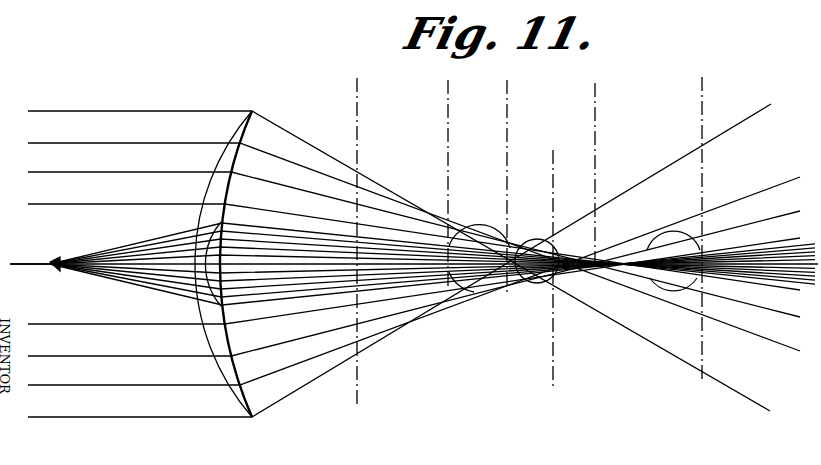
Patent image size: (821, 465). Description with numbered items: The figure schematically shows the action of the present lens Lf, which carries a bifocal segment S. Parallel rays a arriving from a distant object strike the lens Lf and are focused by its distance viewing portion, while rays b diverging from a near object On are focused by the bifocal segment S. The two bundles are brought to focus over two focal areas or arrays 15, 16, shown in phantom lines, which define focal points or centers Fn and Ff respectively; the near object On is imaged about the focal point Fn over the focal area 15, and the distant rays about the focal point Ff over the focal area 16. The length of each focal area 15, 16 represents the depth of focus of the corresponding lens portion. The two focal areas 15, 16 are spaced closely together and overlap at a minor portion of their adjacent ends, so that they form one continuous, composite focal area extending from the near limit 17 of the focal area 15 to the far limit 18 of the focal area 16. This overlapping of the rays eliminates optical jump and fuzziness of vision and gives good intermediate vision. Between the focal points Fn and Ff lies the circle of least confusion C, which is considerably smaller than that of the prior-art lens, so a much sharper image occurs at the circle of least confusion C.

The parallel rays from far object a is at (118, 173).
The rays from near object point b is at (150, 250).
The near object On is at (47, 262).
The far-focus lens Lf is at (226, 207).
The bifocal segment S is at (206, 284).
The near limit 17 is at (447, 155).
The focal area 15 is at (462, 280).
The focal point Fn is at (507, 152).
The circle of least confusion C is at (553, 192).
The focal point Ff is at (597, 130).
The focal area 16 is at (623, 236).
The far limit 18 is at (702, 193).